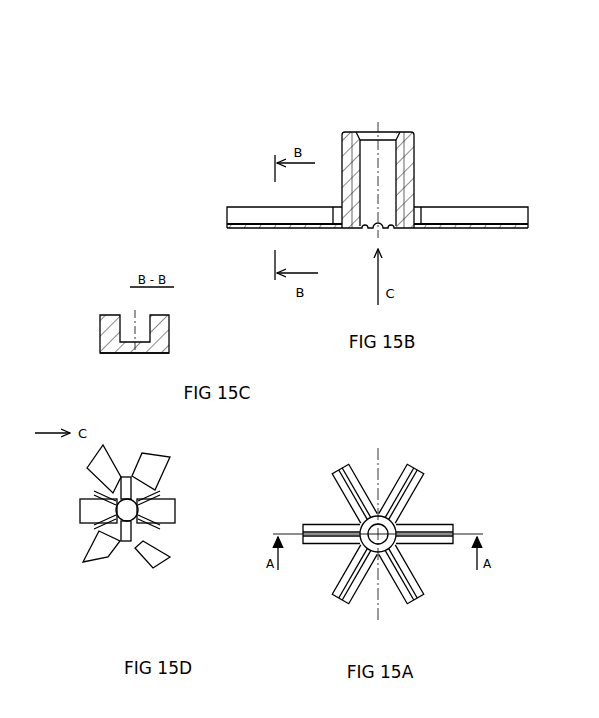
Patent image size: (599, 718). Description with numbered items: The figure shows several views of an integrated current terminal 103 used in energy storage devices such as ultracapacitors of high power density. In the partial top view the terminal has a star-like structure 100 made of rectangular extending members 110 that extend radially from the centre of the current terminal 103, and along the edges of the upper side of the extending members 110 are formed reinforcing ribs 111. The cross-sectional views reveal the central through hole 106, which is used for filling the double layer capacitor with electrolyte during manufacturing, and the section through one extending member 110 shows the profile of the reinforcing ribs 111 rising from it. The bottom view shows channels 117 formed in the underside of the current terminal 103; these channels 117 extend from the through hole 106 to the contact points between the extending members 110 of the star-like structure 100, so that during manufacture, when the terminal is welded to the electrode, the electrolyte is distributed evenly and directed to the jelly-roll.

In FIG. 15A, the star-like structure 100 is at (377, 495).
In FIG. 15B, the integrated current terminal 103 is at (352, 162).
In FIG. 15B, the through hole 106 is at (386, 150).
In FIG. 15D, the through hole 106 is at (123, 517).
In FIG. 15B, the extending members 110 is at (252, 226).
In FIG. 15C, the extending members 110 is at (130, 349).
In FIG. 15B, the reinforcing ribs 111 is at (249, 214).
In FIG. 15C, the reinforcing ribs 111 is at (165, 328).
In FIG. 15A, the reinforcing ribs 111 is at (347, 470).
In FIG. 15D, the channels 117 is at (145, 495).